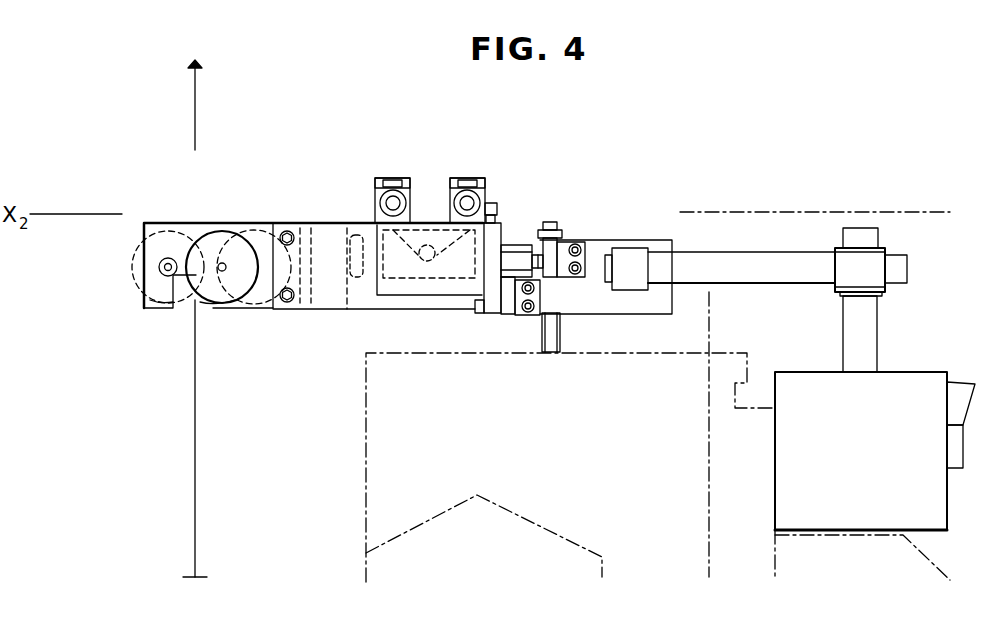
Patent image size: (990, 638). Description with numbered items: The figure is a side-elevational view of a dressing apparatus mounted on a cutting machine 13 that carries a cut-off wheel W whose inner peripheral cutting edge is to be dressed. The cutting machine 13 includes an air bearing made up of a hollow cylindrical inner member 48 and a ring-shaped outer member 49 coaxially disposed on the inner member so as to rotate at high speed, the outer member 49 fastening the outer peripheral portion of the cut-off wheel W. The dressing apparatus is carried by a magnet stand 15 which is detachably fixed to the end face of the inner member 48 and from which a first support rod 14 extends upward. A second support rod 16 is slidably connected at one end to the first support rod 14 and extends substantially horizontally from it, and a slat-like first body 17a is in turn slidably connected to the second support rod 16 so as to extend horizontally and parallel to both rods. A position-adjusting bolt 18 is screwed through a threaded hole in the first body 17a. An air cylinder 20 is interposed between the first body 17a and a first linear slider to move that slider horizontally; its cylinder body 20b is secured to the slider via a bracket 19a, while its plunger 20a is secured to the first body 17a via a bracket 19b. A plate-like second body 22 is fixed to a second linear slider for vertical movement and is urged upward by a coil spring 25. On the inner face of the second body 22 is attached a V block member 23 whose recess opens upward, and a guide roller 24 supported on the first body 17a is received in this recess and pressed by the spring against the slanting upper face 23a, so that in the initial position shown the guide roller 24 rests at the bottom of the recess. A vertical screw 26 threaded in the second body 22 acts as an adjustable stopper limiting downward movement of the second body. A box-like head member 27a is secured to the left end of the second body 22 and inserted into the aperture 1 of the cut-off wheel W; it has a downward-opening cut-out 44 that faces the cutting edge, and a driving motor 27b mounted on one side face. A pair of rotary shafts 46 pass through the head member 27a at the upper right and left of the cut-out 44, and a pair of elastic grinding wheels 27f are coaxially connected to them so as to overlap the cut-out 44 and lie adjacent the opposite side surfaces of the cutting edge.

The aperture 1 is at (198, 166).
The cutting machine 13 is at (356, 416).
The first support rod 14 is at (870, 323).
The magnet stand 15 is at (905, 372).
The second support rod 16 is at (778, 262).
The first body 17a is at (600, 247).
The bolt 18 is at (562, 331).
The bracket 19a is at (506, 308).
The bracket 19b is at (580, 242).
The air cylinder 20 is at (388, 302).
The plunger 20a is at (518, 250).
The cylinder body 20b is at (447, 296).
The second body 22 is at (320, 238).
The V block member 23 is at (410, 278).
The slanting upper face 23a is at (420, 245).
The guide roller 24 is at (440, 236).
The coil spring 25 is at (362, 228).
The vertical screw 26 is at (498, 206).
The head member 27a is at (176, 223).
The driving motor 27b is at (252, 230).
The elastic grinding wheels 27f is at (146, 292).
The cut-out 44 is at (186, 306).
The rotary shafts 46 is at (160, 266).
The inner member 48 is at (378, 468).
The outer member 49 is at (378, 563).
The cut-off wheel W is at (186, 497).